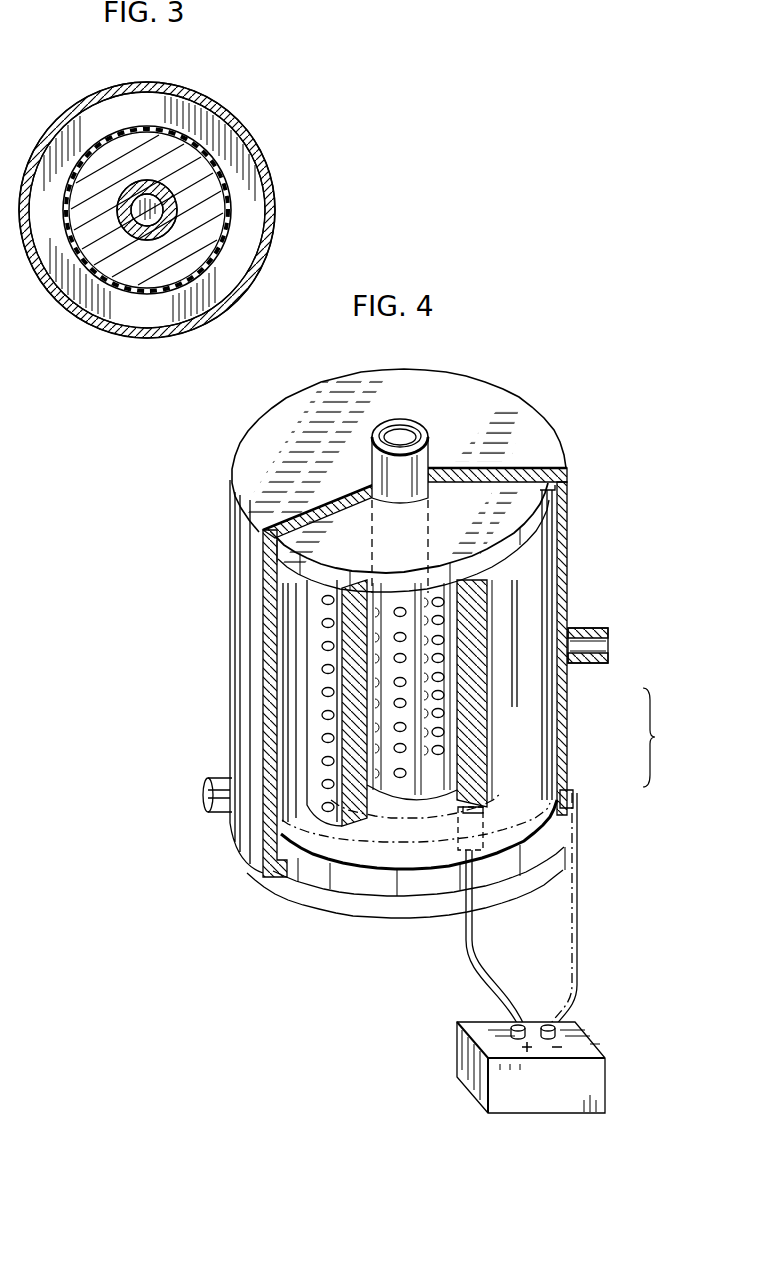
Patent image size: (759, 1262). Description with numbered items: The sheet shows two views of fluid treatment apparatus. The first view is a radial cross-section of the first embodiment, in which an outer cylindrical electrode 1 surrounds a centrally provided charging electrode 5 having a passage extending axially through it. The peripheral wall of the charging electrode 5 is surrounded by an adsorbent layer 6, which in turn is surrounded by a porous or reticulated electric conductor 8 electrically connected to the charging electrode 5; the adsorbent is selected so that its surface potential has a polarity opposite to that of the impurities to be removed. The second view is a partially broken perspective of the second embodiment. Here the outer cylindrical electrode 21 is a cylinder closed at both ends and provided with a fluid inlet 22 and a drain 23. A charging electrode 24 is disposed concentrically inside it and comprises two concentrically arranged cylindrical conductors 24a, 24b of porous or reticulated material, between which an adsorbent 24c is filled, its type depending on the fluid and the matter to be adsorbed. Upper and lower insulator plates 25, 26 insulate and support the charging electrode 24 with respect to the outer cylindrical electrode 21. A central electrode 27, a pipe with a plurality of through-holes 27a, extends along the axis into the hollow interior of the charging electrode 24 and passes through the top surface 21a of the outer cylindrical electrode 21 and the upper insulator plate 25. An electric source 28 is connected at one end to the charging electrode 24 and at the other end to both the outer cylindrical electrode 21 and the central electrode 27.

In FIG. 3, the outer cylindrical electrode 1 is at (252, 148).
In FIG. 3, the charging electrode 5 is at (138, 190).
In FIG. 3, the adsorbent layer 6 is at (128, 290).
In FIG. 3, the porous or reticulated electric conductor 8 is at (90, 270).
In FIG. 4, the outer cylindrical electrode 21 is at (242, 550).
In FIG. 4, the top surface 21a is at (480, 423).
In FIG. 4, the fluid inlet 22 is at (608, 646).
In FIG. 4, the drain 23 is at (213, 813).
In FIG. 4, the charging electrode 24 is at (485, 701).
In FIG. 4, the cylindrical conductor 24a is at (497, 695).
In FIG. 4, the cylindrical conductor 24b is at (443, 732).
In FIG. 4, the adsorbent 24c is at (473, 765).
In FIG. 4, the upper insulator plate 25 is at (543, 537).
In FIG. 4, the lower insulator plate 26 is at (380, 882).
In FIG. 4, the central electrode 27 is at (373, 643).
In FIG. 4, the through-holes 27a is at (400, 773).
In FIG. 4, the electric source 28 is at (606, 1078).